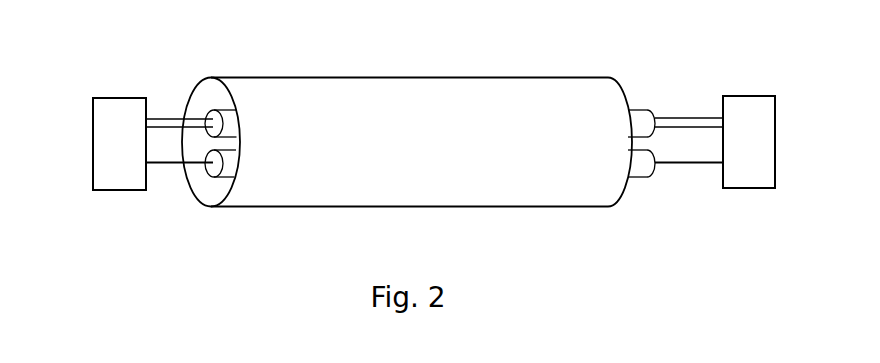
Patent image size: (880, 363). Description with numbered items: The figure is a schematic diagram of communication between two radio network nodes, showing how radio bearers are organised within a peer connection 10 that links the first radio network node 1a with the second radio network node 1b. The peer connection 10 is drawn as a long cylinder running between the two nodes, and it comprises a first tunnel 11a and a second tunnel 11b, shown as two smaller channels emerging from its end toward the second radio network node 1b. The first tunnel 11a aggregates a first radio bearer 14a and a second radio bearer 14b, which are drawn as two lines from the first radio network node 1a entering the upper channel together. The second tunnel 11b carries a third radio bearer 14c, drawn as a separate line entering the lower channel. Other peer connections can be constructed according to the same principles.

The first radio network node 1a is at (105, 156).
The second radio network node 1b is at (735, 156).
The peer connection 10 is at (393, 78).
The first tunnel 11a is at (643, 108).
The second tunnel 11b is at (638, 179).
The first radio bearer 14a is at (178, 118).
The second radio bearer 14b is at (173, 128).
The third radio bearer 14c is at (183, 163).